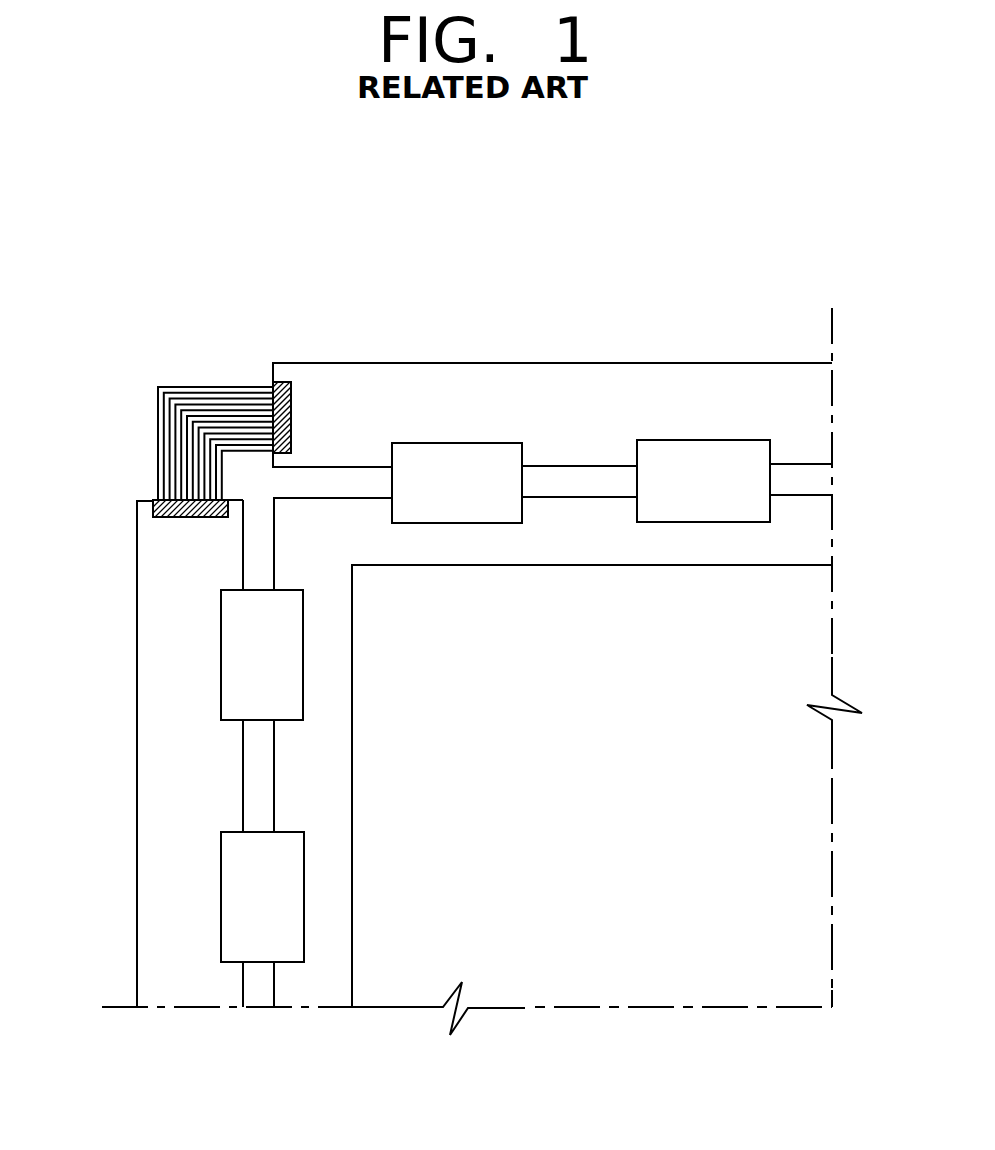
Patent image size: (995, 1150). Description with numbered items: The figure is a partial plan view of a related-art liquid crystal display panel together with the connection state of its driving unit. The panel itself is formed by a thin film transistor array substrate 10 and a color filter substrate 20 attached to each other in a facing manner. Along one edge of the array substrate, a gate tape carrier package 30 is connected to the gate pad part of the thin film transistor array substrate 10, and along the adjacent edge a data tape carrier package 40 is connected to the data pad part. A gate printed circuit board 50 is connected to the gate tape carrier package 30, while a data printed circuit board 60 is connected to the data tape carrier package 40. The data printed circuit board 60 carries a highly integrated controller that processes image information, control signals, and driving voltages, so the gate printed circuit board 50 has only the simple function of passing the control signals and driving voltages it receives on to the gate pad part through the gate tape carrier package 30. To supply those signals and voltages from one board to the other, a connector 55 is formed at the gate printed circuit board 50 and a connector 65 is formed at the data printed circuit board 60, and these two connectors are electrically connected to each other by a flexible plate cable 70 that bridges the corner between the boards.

The thin film transistor array substrate 10 is at (325, 980).
The color filter substrate 20 is at (575, 978).
The gate tape carrier package 30 is at (235, 662).
The data tape carrier package 40 is at (482, 463).
The gate printed circuit board 50 is at (157, 565).
The connector 55 is at (152, 505).
The data printed circuit board 60 is at (392, 378).
The connector 65 is at (277, 368).
The flexible plate cable 70 is at (212, 387).